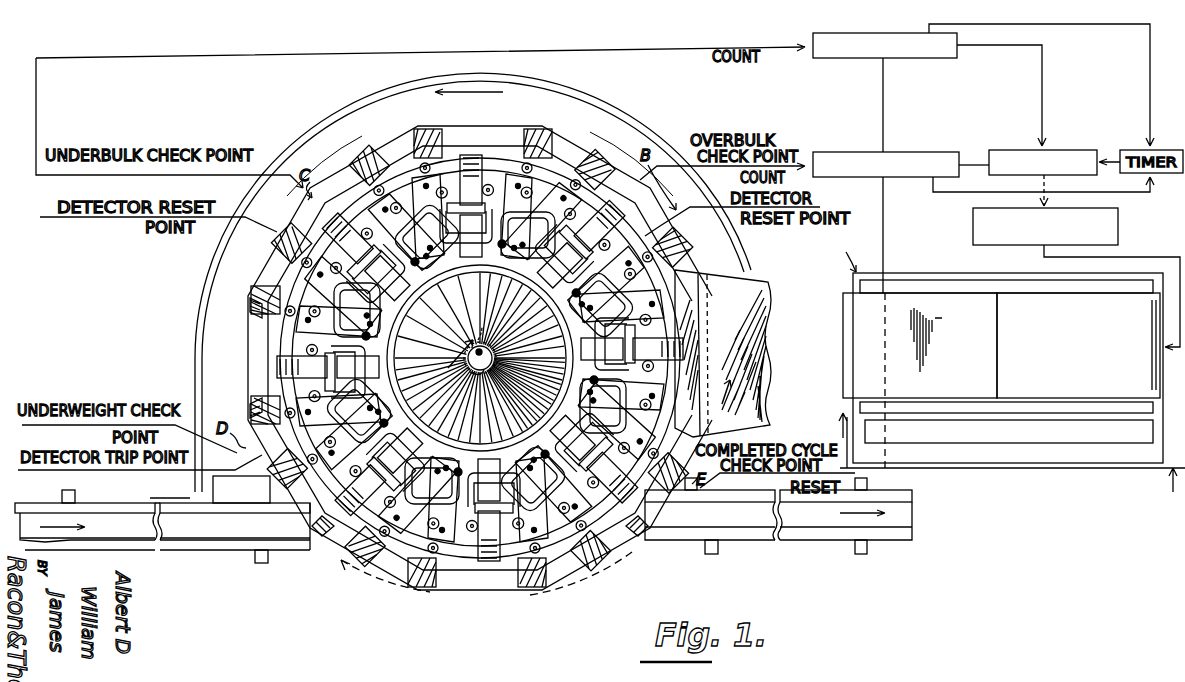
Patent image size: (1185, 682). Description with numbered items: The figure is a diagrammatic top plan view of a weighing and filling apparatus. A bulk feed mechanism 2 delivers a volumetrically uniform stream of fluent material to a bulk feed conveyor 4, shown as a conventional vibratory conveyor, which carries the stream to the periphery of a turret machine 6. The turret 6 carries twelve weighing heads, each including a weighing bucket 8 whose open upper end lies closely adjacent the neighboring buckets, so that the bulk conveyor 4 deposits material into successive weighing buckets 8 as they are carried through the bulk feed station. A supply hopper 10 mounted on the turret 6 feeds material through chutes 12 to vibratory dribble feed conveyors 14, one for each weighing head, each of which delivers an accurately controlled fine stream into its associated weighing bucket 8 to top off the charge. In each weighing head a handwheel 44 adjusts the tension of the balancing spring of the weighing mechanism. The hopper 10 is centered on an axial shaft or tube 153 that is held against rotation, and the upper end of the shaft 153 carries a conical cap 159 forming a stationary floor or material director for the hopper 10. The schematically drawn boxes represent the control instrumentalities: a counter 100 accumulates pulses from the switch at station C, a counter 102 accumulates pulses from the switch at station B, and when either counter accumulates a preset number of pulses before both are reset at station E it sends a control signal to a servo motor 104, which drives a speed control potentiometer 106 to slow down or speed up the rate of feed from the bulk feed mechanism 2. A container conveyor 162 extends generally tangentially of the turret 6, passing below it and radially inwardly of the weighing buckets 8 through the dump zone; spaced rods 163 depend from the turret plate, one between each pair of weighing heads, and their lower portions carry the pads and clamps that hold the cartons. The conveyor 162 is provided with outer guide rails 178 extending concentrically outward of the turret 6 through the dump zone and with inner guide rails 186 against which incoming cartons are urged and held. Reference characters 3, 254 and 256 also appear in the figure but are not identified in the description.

The bulk feed mechanism 2 is at (948, 270).
The section line 3- 3 is at (587, 360).
The bulk feed conveyor 4 is at (1003, 371).
The turret machine 6 is at (186, 278).
The weighing bucket 8 is at (358, 160).
The supply hopper 10 is at (450, 368).
The chutes 12 is at (470, 318).
The vibratory dribble feed conveyor 14 is at (360, 188).
The handwheel 44 is at (352, 292).
The counter 100 is at (918, 58).
The counter 102 is at (928, 152).
The servo motor 104 is at (1077, 150).
The speed control potentiometer 106 is at (1118, 222).
The axial shaft or tube 153 is at (482, 338).
The conical cap 159 is at (470, 376).
The container conveyor 162 is at (206, 544).
The rods 163 is at (250, 298).
The outer guide rails 178 is at (282, 563).
The inner guide rails 186 is at (163, 502).
The clamp bracket 254 is at (542, 232).
The clamp bracket 256 is at (380, 240).